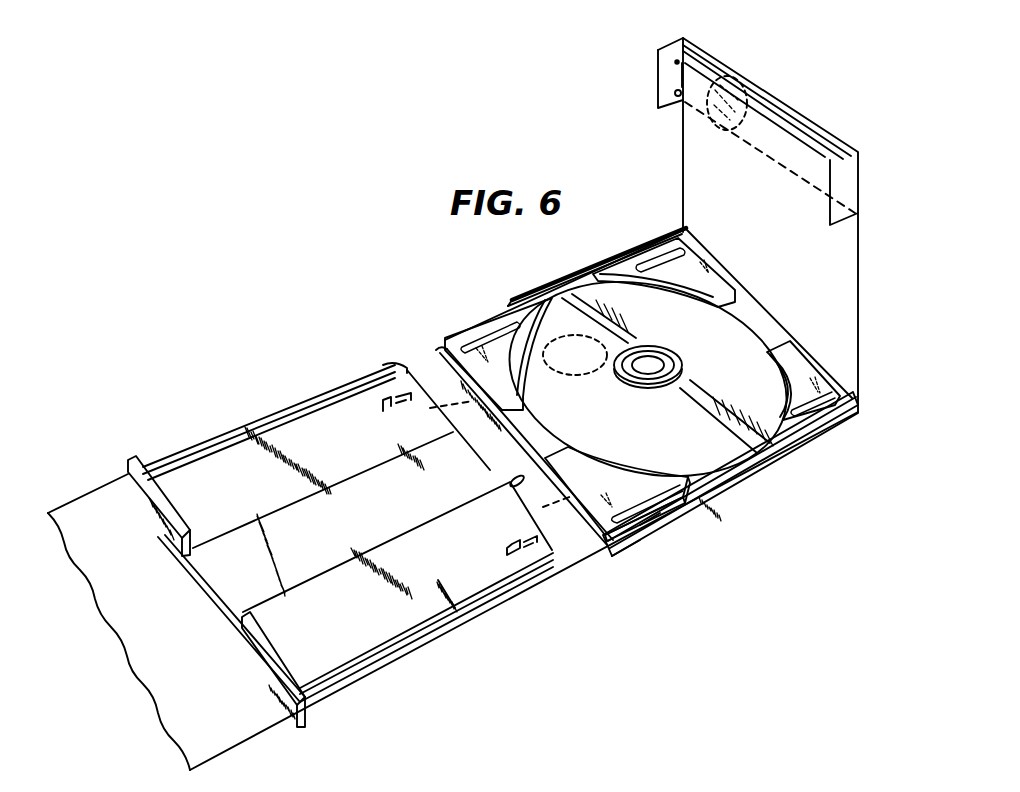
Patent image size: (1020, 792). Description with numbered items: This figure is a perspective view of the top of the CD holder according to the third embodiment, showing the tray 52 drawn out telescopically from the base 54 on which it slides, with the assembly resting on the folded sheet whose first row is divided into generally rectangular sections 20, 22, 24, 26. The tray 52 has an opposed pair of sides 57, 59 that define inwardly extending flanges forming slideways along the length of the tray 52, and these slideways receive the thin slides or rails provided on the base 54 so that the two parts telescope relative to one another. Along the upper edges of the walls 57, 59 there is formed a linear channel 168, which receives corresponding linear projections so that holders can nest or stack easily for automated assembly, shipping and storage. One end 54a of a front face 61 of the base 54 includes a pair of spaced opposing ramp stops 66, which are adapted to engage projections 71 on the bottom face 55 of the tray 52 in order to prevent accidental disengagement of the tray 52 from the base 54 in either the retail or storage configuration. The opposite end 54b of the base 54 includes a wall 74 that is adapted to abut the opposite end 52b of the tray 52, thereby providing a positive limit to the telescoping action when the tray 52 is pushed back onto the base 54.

The rectangular section 20 is at (858, 246).
The linear channel 168 is at (683, 230).
The tray side 59 is at (610, 252).
The projection 71 is at (700, 260).
The tray 52 is at (722, 522).
The opposite end of the tray 52b is at (517, 443).
The bottom face of the tray 55 is at (662, 513).
The tray side 57 is at (816, 432).
The rectangular section 22 is at (622, 540).
The base 54 is at (420, 645).
The end of the base 54a is at (520, 484).
The opposite end of the base 54b is at (263, 672).
The front face of the base 61 is at (449, 582).
The ramp stop 66 is at (386, 404).
The wall 74 is at (160, 540).
The rectangular section 24 is at (360, 694).
The rectangular section 26 is at (205, 756).